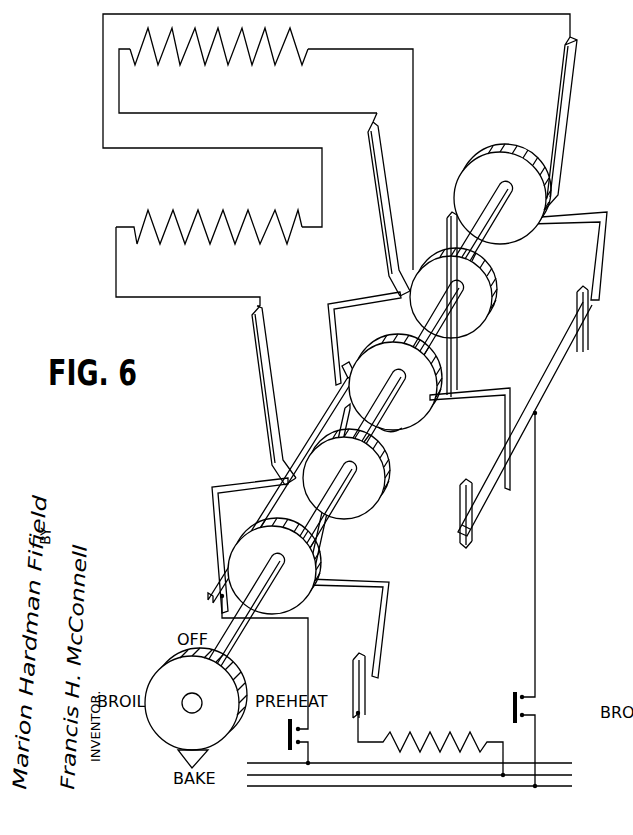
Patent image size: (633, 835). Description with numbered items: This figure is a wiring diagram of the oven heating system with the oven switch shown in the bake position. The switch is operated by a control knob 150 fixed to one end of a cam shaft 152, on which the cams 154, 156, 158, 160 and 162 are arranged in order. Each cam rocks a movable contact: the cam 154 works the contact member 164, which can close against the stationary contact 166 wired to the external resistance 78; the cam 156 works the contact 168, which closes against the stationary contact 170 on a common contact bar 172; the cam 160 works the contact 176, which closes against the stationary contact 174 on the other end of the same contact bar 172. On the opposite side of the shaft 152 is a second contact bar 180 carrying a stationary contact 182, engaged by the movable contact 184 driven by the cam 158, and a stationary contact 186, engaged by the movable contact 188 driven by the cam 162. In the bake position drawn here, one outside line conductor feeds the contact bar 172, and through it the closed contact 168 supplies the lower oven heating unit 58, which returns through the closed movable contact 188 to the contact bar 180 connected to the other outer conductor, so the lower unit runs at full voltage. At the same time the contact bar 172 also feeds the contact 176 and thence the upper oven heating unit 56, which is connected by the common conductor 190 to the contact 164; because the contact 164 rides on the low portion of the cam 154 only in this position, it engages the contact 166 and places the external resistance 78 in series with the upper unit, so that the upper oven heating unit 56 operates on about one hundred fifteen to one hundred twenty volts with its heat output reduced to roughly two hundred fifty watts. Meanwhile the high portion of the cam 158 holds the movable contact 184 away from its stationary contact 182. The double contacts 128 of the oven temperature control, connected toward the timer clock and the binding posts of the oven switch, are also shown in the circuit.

The upper oven heating unit 56 is at (230, 62).
The lower oven heating unit 58 is at (232, 246).
The external resistance 78 is at (440, 739).
The double contacts 128 is at (513, 712).
The control knob 150 is at (165, 675).
The cam shaft 152 is at (242, 635).
The cam 154 is at (300, 600).
The cam 156 is at (362, 507).
The cam 158 is at (425, 412).
The cam 160 is at (480, 318).
The cam 162 is at (510, 238).
The contact member 164 is at (383, 608).
The stationary contact 166 is at (352, 666).
The contact 168 is at (268, 390).
The stationary contact 170 is at (228, 550).
The contact bar 172 is at (272, 503).
The stationary contact 174 is at (350, 352).
The contact 176 is at (388, 251).
The contact bar 180 is at (553, 394).
The stationary contact 182 is at (462, 488).
The movable contact 184 is at (458, 348).
The stationary contact 186 is at (583, 300).
The movable contact 188 is at (557, 125).
The common conductor 190 is at (390, 440).